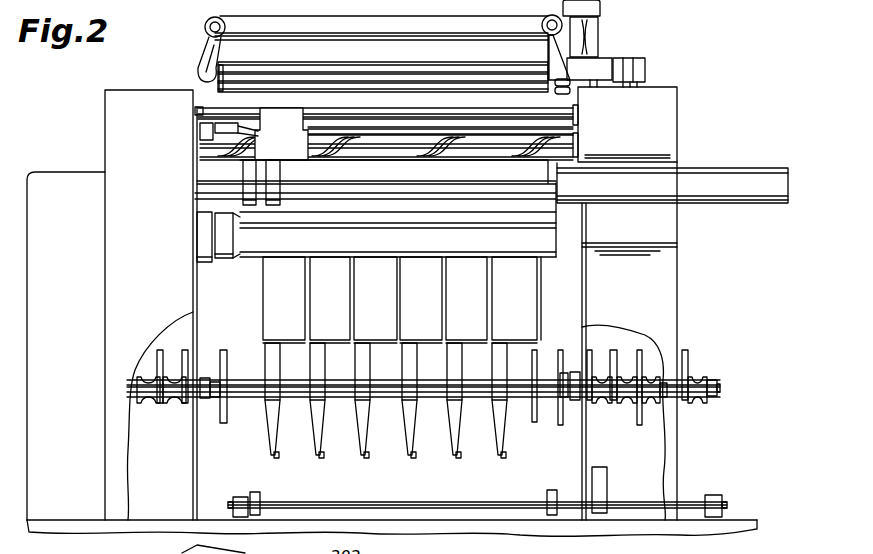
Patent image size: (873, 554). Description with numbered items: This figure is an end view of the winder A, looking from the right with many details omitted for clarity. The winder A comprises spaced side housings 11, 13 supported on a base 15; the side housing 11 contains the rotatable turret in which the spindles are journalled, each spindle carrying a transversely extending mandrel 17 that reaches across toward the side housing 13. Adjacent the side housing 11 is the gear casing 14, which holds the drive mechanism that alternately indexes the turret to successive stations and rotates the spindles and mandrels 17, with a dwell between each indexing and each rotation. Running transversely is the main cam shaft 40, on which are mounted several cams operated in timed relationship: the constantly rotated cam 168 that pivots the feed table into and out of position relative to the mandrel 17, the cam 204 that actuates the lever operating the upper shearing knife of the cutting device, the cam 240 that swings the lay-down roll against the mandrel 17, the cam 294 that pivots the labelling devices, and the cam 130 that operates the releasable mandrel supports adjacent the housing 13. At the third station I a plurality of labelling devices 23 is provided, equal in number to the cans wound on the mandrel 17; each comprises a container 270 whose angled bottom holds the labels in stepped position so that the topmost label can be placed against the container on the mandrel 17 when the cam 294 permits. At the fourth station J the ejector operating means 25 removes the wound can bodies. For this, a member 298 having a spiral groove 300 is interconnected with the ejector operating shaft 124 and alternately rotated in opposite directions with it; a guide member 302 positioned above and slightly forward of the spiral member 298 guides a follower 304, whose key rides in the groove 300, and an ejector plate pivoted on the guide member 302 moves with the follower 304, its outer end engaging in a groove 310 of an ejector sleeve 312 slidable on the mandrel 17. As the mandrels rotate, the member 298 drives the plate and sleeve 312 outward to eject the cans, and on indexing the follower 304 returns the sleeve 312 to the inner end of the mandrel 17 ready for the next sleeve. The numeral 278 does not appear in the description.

The side housing 11 is at (108, 132).
The side housing 13 is at (668, 278).
The gear casing 14 is at (48, 182).
The base 15 is at (673, 521).
The mandrel 17 is at (398, 231).
The labelling devices 23 is at (273, 303).
The ejector operating means 25 is at (281, 134).
The main cam shaft 40 is at (248, 398).
The ejector operating shaft 124 is at (193, 145).
The cam 130 is at (642, 413).
The cam 168 is at (222, 351).
The cam 204 is at (164, 404).
The cam 240 is at (187, 404).
The container 270 is at (375, 298).
The blade holder 278 is at (243, 376).
The cam 294 is at (533, 423).
The spiral member 298 is at (391, 154).
The spiral groove 300 is at (463, 152).
The guide member 302 is at (452, 115).
The follower 304 is at (300, 159).
The groove 310 is at (257, 172).
The ejector sleeve 312 is at (227, 238).
The winder A is at (677, 92).
The fourth station J is at (547, 200).
The third station I is at (545, 252).